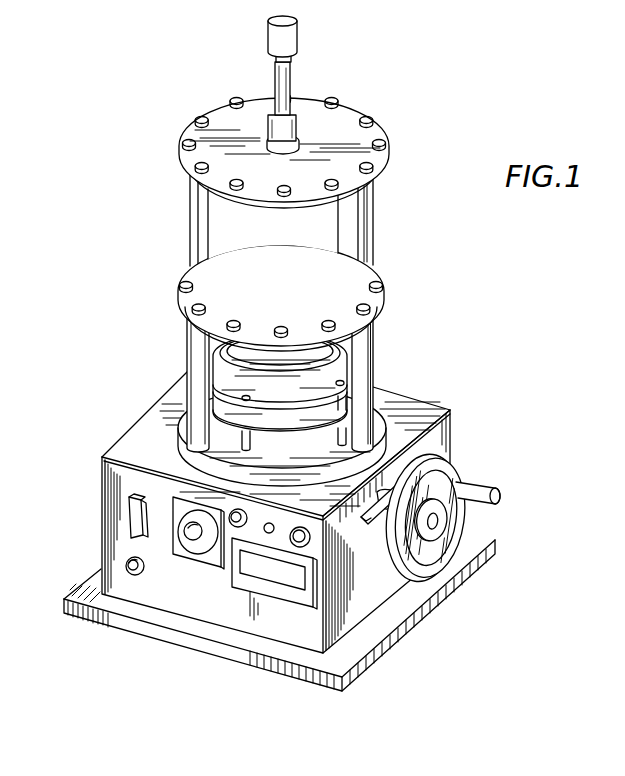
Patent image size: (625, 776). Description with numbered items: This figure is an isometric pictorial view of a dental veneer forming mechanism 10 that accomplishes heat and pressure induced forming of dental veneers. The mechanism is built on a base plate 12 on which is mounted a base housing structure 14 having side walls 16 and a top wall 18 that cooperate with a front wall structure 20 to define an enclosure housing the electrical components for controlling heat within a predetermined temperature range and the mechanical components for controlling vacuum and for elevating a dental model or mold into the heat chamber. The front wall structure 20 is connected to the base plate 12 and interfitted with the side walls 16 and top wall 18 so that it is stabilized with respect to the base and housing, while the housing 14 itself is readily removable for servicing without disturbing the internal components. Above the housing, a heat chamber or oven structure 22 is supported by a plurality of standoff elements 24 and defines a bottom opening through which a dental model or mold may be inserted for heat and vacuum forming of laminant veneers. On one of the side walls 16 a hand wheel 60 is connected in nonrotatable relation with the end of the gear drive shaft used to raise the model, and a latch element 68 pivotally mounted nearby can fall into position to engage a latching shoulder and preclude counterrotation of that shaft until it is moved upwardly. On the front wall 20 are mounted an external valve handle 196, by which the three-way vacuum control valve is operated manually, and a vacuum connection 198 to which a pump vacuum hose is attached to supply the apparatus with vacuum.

The mechanism 10 is at (397, 82).
The base plate 12 is at (286, 670).
The base housing structure 14 is at (271, 522).
The side walls 16 is at (422, 543).
The top wall 18 is at (146, 432).
The front wall structure 20 is at (171, 571).
The heat chamber or oven structure 22 is at (192, 130).
The standoff elements 24 is at (377, 352).
The hand wheel 60 is at (458, 470).
The latch element 68 is at (370, 526).
The external valve handle 196 is at (130, 513).
The vacuum connection 198 is at (126, 562).